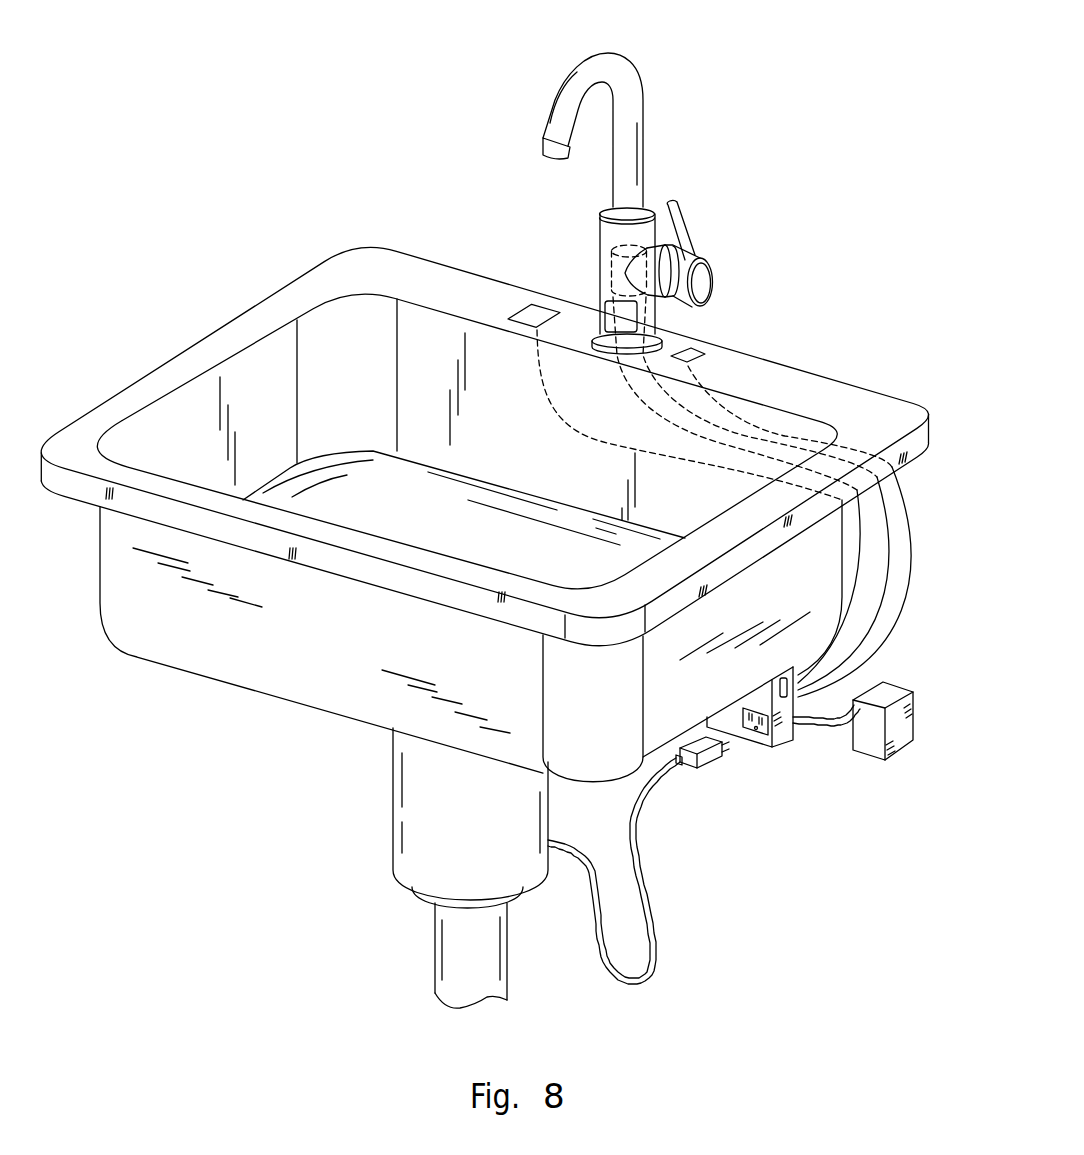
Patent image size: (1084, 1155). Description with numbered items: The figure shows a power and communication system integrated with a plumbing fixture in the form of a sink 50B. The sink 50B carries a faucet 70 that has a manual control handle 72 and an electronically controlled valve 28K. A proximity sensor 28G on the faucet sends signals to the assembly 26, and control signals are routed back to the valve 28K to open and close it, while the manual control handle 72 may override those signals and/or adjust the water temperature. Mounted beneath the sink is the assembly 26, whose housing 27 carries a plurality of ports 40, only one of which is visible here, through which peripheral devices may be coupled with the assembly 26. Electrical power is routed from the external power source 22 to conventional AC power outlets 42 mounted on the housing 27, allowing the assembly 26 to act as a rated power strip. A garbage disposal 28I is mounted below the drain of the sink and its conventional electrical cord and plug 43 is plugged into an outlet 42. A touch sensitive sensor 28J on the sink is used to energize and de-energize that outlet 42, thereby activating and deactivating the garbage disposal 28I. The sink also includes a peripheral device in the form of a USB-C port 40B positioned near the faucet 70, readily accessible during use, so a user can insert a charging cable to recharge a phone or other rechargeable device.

The faucet 70 is at (588, 68).
The manual control handle 72 is at (686, 226).
The electronically controlled valve 28K is at (600, 255).
The proximity sensor 28G is at (618, 322).
The touch sensitive sensor 28J is at (522, 308).
The USB-C port 40B is at (700, 353).
The sink 50B is at (230, 337).
The garbage disposal 28I is at (407, 812).
The port 40 is at (787, 687).
The AC power outlet 42 is at (765, 737).
The plug 43 is at (713, 763).
The housing 27 is at (787, 730).
The assembly 26 is at (779, 750).
The external power source 22 is at (900, 728).